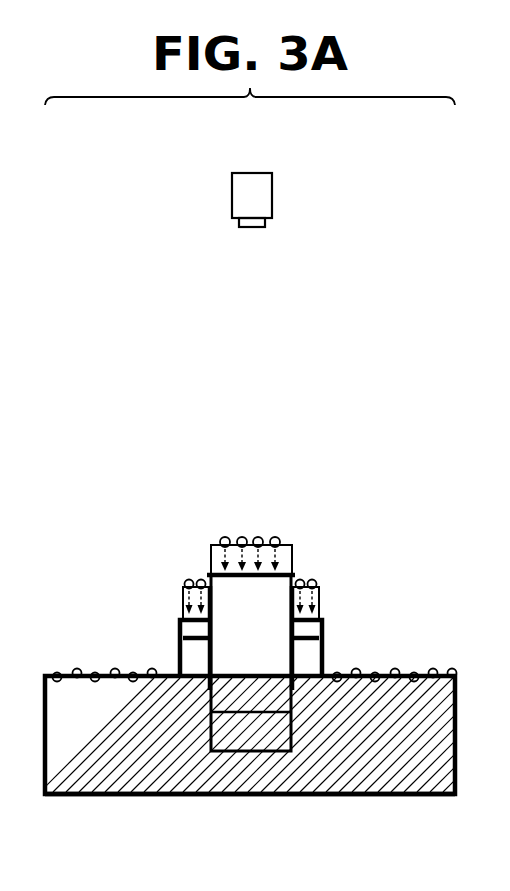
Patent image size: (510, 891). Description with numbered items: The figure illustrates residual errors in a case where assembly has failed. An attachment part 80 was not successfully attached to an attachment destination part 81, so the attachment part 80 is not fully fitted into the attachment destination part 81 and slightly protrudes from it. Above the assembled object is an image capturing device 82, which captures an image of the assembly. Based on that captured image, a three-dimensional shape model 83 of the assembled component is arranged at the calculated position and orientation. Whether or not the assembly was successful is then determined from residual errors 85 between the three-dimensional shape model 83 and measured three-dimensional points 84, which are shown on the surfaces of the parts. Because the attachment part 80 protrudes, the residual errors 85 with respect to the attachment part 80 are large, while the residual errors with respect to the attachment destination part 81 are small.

The attachment part 80 is at (223, 598).
The attachment destination part 81 is at (140, 775).
The image capturing device 82 is at (240, 172).
The three-dimensional shape model 83 is at (382, 794).
The three-dimensional points 84 is at (275, 540).
The residual errors 85 is at (321, 599).